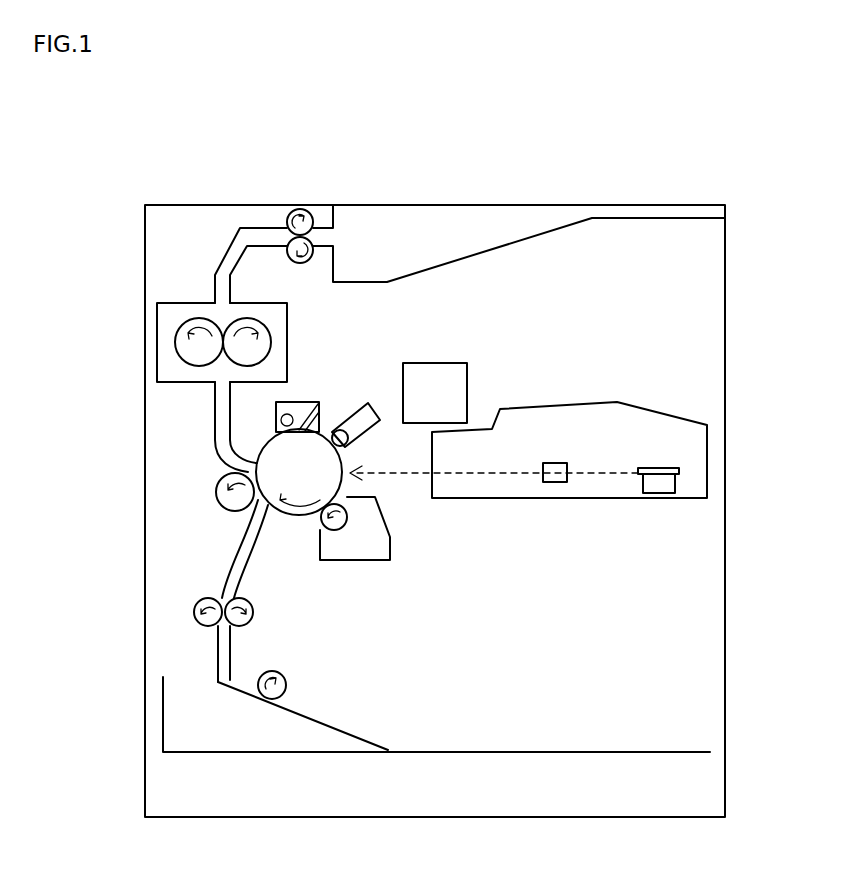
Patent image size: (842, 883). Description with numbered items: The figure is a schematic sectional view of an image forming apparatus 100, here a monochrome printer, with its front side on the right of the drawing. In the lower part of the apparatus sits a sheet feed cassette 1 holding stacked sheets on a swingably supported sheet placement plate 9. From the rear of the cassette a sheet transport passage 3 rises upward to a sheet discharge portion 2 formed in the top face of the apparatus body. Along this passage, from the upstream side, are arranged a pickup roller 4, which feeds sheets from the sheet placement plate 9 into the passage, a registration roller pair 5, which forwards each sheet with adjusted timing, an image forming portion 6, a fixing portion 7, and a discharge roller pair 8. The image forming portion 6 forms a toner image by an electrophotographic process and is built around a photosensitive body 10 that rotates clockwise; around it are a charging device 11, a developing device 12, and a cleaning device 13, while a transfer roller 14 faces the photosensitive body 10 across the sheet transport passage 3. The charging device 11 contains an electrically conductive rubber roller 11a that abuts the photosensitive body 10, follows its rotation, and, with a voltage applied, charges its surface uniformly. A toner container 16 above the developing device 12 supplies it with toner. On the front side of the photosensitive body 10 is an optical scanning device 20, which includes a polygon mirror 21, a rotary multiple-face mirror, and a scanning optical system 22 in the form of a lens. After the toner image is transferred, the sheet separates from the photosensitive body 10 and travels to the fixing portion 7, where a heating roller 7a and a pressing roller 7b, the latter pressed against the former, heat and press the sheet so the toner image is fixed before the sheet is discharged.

The image forming apparatus 100 is at (645, 158).
The sheet feed cassette 1 is at (208, 752).
The sheet discharge portion 2 is at (362, 268).
The sheet transport passage 3 is at (230, 573).
The pickup roller 4 is at (286, 685).
The registration roller pair 5 is at (194, 607).
The image forming portion 6 is at (182, 443).
The fixing portion 7 is at (201, 341).
The heating roller 7a is at (268, 328).
The pressing roller 7b is at (175, 351).
The discharge roller pair 8 is at (300, 208).
The sheet placement plate 9 is at (325, 725).
The photosensitive body 10 is at (290, 513).
The charging device 11 is at (378, 410).
The electrically conductive rubber roller 11a is at (347, 446).
The developing device 12 is at (371, 555).
The cleaning device 13 is at (297, 405).
The transfer roller 14 is at (216, 492).
The toner container 16 is at (430, 380).
The optical scanning device 20 is at (633, 405).
The polygon mirror 21 is at (657, 474).
The scanning optical system 22 is at (555, 482).